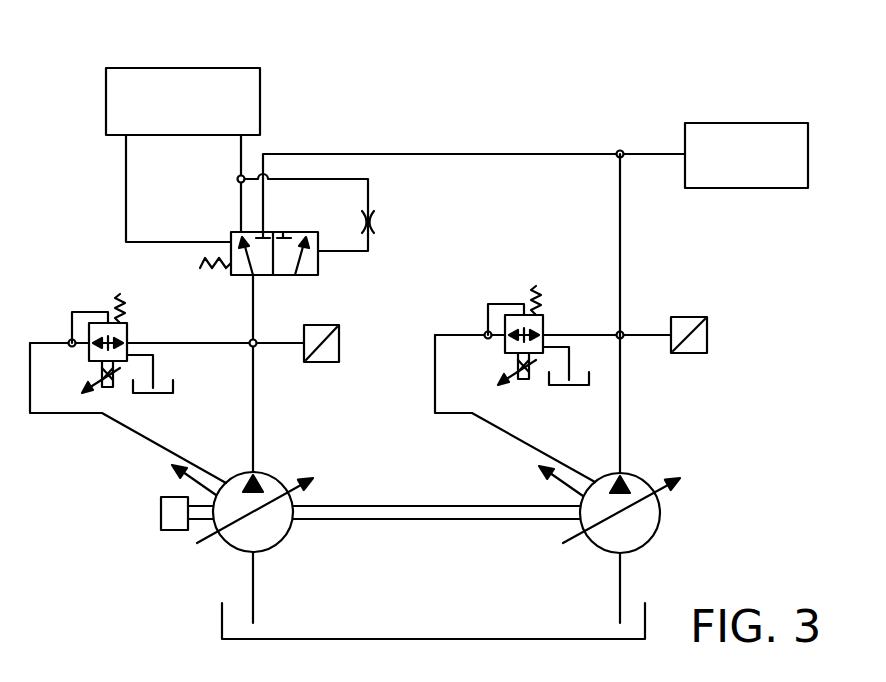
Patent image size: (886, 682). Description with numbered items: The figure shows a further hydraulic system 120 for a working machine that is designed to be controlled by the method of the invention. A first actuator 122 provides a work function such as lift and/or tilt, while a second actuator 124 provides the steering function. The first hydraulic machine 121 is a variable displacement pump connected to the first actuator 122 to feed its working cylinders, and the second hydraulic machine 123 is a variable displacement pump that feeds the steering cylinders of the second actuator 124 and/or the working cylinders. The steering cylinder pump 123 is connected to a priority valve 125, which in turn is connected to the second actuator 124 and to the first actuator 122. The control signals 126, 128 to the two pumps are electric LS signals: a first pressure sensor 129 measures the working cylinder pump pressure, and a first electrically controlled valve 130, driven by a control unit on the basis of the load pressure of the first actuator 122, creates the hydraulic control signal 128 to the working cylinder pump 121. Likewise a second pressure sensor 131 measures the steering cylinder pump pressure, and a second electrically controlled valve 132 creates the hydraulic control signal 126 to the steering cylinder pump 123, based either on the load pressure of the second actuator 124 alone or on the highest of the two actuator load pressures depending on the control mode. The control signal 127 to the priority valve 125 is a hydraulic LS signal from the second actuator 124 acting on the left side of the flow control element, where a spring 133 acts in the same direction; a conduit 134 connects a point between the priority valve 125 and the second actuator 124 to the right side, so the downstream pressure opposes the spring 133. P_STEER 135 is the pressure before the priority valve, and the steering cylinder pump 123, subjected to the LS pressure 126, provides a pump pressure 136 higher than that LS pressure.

The hydraulic system 120 is at (727, 50).
The first hydraulic machine 121 is at (660, 520).
The first actuator 122 is at (740, 165).
The second hydraulic machine 123 is at (290, 537).
The second actuator 124 is at (130, 98).
The priority valve 125 is at (320, 272).
The control signal 126 is at (90, 413).
The control signal 127 is at (126, 193).
The control signal 128 is at (454, 413).
The first pressure sensor 129 is at (690, 353).
The first electrically controlled valve 130 is at (544, 325).
The second pressure sensor 131 is at (322, 363).
The second electrically controlled valve 132 is at (130, 333).
The spring 133 is at (200, 265).
The conduit 134 is at (370, 190).
The P_STEER 135 is at (237, 179).
The pump pressure 136 is at (253, 405).